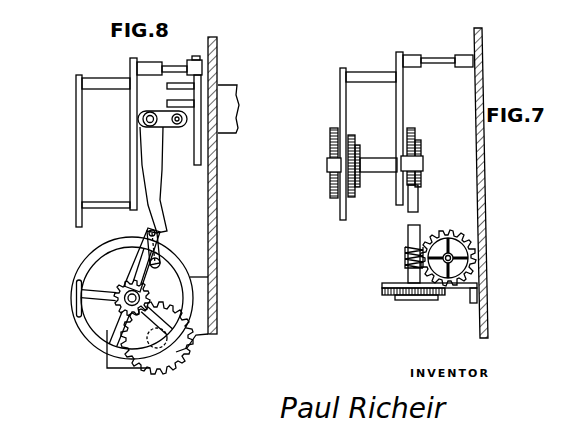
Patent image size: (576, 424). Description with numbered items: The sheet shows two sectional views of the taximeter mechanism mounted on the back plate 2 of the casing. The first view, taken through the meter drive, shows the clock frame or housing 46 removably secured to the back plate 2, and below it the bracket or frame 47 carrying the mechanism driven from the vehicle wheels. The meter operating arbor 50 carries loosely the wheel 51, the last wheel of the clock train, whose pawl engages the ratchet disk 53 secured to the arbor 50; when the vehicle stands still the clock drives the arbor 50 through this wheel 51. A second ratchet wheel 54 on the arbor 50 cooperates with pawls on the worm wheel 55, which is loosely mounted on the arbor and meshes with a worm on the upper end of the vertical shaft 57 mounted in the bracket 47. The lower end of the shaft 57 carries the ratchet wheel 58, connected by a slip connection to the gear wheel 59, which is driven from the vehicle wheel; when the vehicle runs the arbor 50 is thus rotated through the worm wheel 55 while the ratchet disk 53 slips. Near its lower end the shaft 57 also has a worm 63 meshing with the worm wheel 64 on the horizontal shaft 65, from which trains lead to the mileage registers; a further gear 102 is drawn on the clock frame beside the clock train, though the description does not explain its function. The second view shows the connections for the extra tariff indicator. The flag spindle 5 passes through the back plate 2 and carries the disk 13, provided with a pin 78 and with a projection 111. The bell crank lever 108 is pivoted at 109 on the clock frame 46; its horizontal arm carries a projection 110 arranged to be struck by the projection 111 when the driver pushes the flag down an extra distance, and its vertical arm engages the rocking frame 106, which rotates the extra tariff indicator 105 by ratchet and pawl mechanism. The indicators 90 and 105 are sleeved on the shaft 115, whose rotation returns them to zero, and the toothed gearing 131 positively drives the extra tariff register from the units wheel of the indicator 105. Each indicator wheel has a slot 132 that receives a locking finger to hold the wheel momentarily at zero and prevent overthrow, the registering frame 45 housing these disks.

In FIG. 8, the back plate 2 is at (218, 216).
In FIG. 7, the back plate 2 is at (483, 150).
In FIG. 8, the spindle 5 is at (236, 116).
In FIG. 8, the disk 13 is at (197, 166).
In FIG. 8, the frame or housing 45 is at (206, 280).
In FIG. 8, the frame or housing 46 is at (76, 110).
In FIG. 7, the frame or housing 46 is at (366, 72).
In FIG. 7, the bracket or frame 47 is at (387, 284).
In FIG. 7, the meter operating arbor 50 is at (376, 160).
In FIG. 7, the wheel 51 is at (355, 130).
In FIG. 7, the ratchet disk 53 is at (360, 187).
In FIG. 7, the ratchet wheel 54 is at (421, 150).
In FIG. 7, the worm wheel 55 is at (411, 128).
In FIG. 7, the shaft 57 is at (418, 205).
In FIG. 7, the ratchet wheel 58 is at (411, 300).
In FIG. 7, the gear wheel 59 is at (382, 291).
In FIG. 7, the worm 63 is at (407, 250).
In FIG. 7, the worm wheel 64 is at (460, 236).
In FIG. 7, the horizontal shaft 65 is at (452, 262).
In FIG. 8, the pin or projection 78 is at (178, 83).
In FIG. 8, the indicator 90 is at (92, 342).
In FIG. 7, the gear 102 is at (330, 197).
In FIG. 8, the indicator 105 is at (84, 333).
In FIG. 8, the rocking frame 106 is at (145, 274).
In FIG. 8, the bell crank lever 108 is at (155, 175).
In FIG. 8, the pivot 109 is at (143, 119).
In FIG. 8, the projection 110 is at (182, 121).
In FIG. 8, the projection 111 is at (170, 102).
In FIG. 8, the shaft 115 is at (140, 305).
In FIG. 8, the toothed gearing 131 is at (156, 373).
In FIG. 8, the slot 132 is at (76, 297).